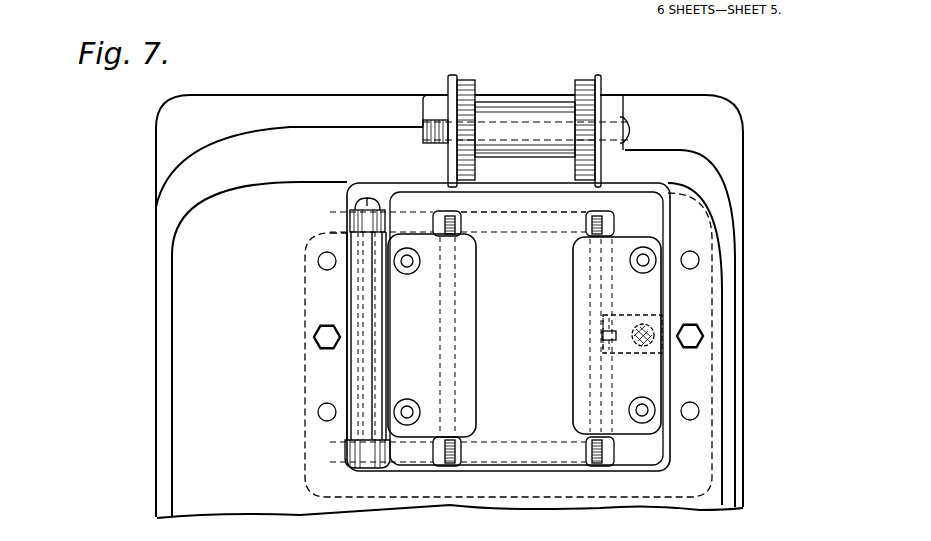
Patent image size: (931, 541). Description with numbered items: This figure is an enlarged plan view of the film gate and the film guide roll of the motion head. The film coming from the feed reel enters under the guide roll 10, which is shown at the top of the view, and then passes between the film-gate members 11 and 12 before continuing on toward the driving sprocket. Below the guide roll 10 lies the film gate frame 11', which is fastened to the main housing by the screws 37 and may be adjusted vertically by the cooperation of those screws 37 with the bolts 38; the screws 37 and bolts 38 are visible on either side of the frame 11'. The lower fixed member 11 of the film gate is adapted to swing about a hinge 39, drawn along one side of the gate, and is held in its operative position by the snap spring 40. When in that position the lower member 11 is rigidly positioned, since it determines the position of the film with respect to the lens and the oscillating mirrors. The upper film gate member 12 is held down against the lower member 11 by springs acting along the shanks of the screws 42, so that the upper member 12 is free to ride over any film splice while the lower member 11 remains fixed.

The guide roll 10 is at (585, 78).
The lower fixed film-gate member 11 is at (486, 317).
The film gate frame 11' is at (523, 192).
The upper film gate member 12 is at (470, 292).
The screws 37 is at (318, 261).
The bolts 38 is at (313, 337).
The hinge 39 is at (355, 302).
The snap spring 40 is at (603, 333).
The screws 42 is at (407, 262).